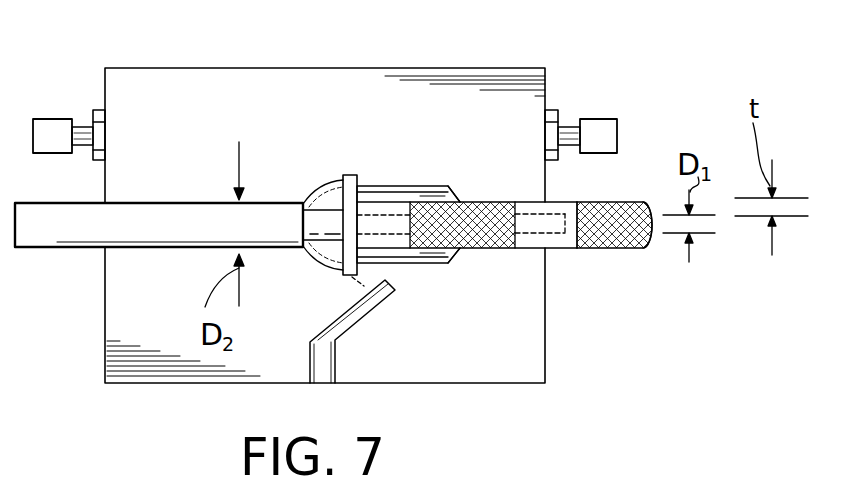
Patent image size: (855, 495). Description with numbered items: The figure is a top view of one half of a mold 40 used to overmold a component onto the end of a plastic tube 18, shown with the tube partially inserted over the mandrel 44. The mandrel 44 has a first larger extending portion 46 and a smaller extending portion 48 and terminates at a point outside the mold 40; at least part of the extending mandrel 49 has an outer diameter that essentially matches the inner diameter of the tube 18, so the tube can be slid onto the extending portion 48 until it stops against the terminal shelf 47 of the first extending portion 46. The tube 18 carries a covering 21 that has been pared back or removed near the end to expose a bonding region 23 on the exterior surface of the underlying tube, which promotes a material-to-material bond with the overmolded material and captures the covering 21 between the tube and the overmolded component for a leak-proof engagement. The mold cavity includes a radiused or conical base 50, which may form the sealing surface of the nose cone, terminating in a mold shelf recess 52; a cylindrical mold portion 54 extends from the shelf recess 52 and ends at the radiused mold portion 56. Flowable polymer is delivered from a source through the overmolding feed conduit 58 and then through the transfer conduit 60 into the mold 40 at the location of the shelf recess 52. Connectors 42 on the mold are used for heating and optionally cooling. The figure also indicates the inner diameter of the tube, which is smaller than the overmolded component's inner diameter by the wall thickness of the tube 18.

The plastic tube 18 is at (617, 250).
The covering 21 is at (632, 200).
The bonding region 23 is at (385, 200).
The mold 40 is at (472, 64).
The connectors 42 is at (62, 118).
The mandrel 44 is at (175, 202).
The first extending portion 46 is at (316, 217).
The terminal shelf 47 is at (362, 246).
The extending portion 48 is at (545, 225).
The extending mandrel 49 is at (566, 222).
The conical base 50 is at (320, 187).
The mold shelf recess 52 is at (350, 175).
The cylindrical mold portion 54 is at (427, 190).
The radiused mold portion 56 is at (453, 200).
The overmolding feed conduit 58 is at (368, 318).
The transfer conduit 60 is at (362, 284).